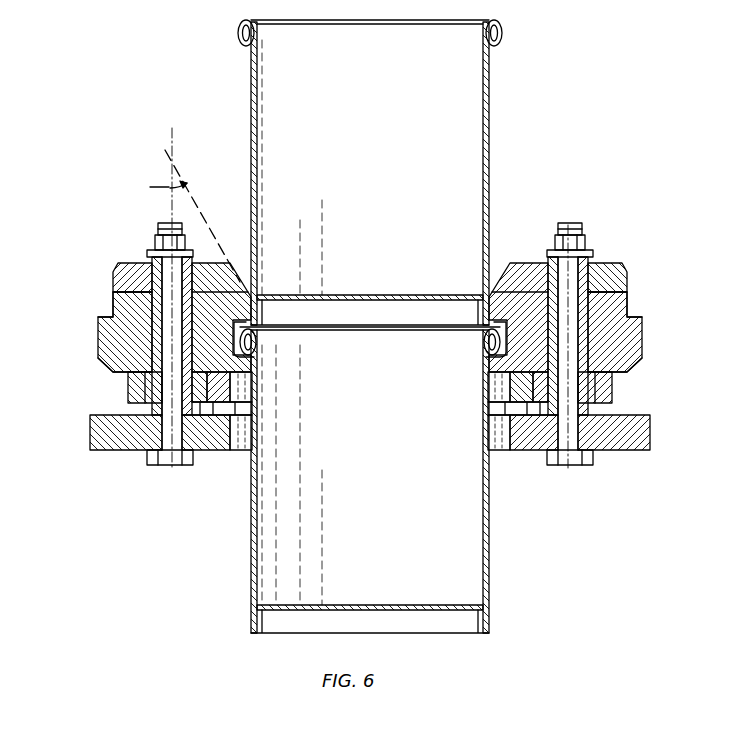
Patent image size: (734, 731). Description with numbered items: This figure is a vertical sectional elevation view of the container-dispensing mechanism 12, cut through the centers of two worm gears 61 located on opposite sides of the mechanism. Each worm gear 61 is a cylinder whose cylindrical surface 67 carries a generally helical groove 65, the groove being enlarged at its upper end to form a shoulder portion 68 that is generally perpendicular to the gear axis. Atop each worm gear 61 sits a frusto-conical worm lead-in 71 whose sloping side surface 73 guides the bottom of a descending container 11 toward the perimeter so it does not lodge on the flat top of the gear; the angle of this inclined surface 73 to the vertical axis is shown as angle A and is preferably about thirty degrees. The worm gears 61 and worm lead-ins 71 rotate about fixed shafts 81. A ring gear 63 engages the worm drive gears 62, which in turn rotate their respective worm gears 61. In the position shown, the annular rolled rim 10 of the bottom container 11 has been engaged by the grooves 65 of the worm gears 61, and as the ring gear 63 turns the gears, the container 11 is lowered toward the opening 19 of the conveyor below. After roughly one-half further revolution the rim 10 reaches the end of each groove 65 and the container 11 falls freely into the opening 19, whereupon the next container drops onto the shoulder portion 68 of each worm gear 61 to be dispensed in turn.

The annular rolled rim 10 is at (500, 34).
The container 11 is at (373, 91).
The container-dispensing mechanism 12 is at (88, 287).
The opening 19 is at (258, 296).
The worm gear 61 is at (113, 361).
The worm drive gear 62 is at (130, 393).
The ring gear 63 is at (217, 400).
The groove 65 is at (240, 324).
The cylindrical surface 67 is at (97, 340).
The shoulder portion 68 is at (108, 318).
The worm lead-in 71 is at (115, 271).
The sloping side surface 73 is at (246, 289).
The fixed shaft 81 is at (163, 233).